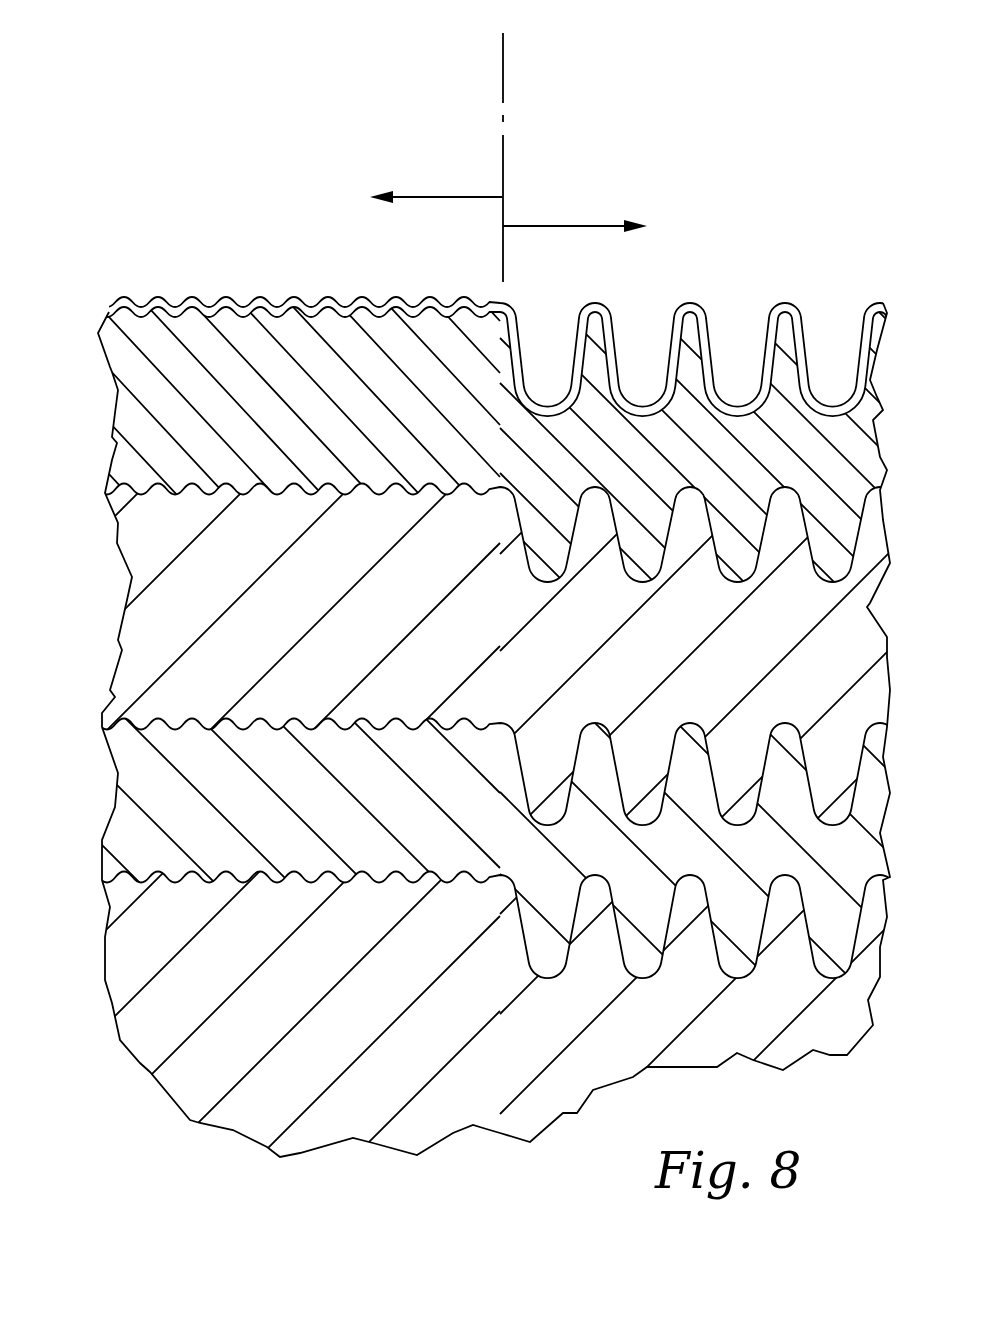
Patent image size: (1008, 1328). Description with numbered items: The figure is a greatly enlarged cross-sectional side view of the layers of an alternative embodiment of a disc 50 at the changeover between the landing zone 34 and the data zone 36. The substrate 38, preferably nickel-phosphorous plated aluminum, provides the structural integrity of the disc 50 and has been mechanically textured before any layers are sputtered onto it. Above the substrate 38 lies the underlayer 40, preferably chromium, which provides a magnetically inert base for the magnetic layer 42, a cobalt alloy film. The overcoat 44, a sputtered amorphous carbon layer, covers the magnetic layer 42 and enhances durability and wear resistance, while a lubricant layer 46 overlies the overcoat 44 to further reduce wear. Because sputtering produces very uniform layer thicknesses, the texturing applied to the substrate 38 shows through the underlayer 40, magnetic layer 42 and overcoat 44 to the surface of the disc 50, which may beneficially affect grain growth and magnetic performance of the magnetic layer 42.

The disc 50 is at (277, 122).
The lubricant layer 46 is at (598, 304).
The overcoat 44 is at (157, 390).
The magnetic layer 42 is at (177, 585).
The underlayer 40 is at (147, 793).
The substrate 38 is at (130, 972).
The data zone 36 is at (436, 181).
The landing zone 34 is at (575, 210).